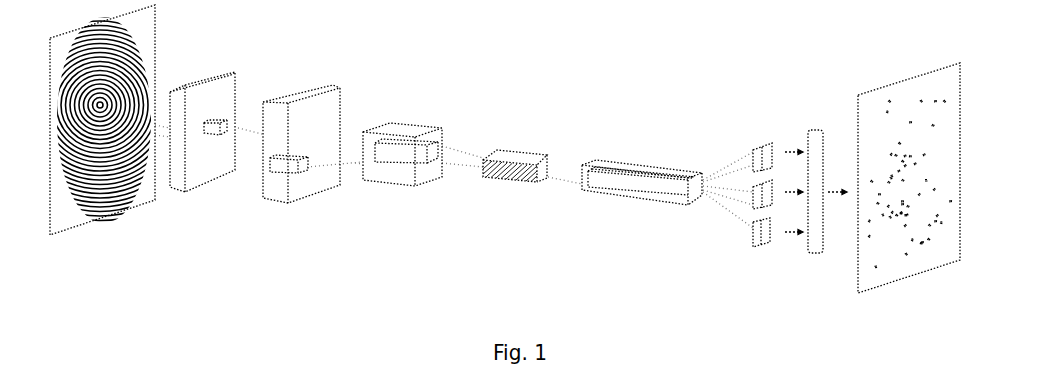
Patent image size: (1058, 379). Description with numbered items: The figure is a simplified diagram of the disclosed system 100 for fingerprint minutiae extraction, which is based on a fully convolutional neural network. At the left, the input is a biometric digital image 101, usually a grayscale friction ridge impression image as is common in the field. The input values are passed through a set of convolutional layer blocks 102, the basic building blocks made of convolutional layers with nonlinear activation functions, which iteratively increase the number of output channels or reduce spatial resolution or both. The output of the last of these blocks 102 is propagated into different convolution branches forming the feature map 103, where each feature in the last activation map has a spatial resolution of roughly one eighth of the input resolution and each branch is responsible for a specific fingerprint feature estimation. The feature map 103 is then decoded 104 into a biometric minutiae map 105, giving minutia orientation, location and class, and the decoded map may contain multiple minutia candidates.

The system for fingerprint minutiae extraction 100 is at (651, 66).
The biometric digital image 101 is at (108, 217).
The basic building blocks 102 is at (338, 84).
The feature map 103 is at (765, 144).
The decoding 104 is at (812, 131).
The biometric minutiae map 105 is at (910, 82).